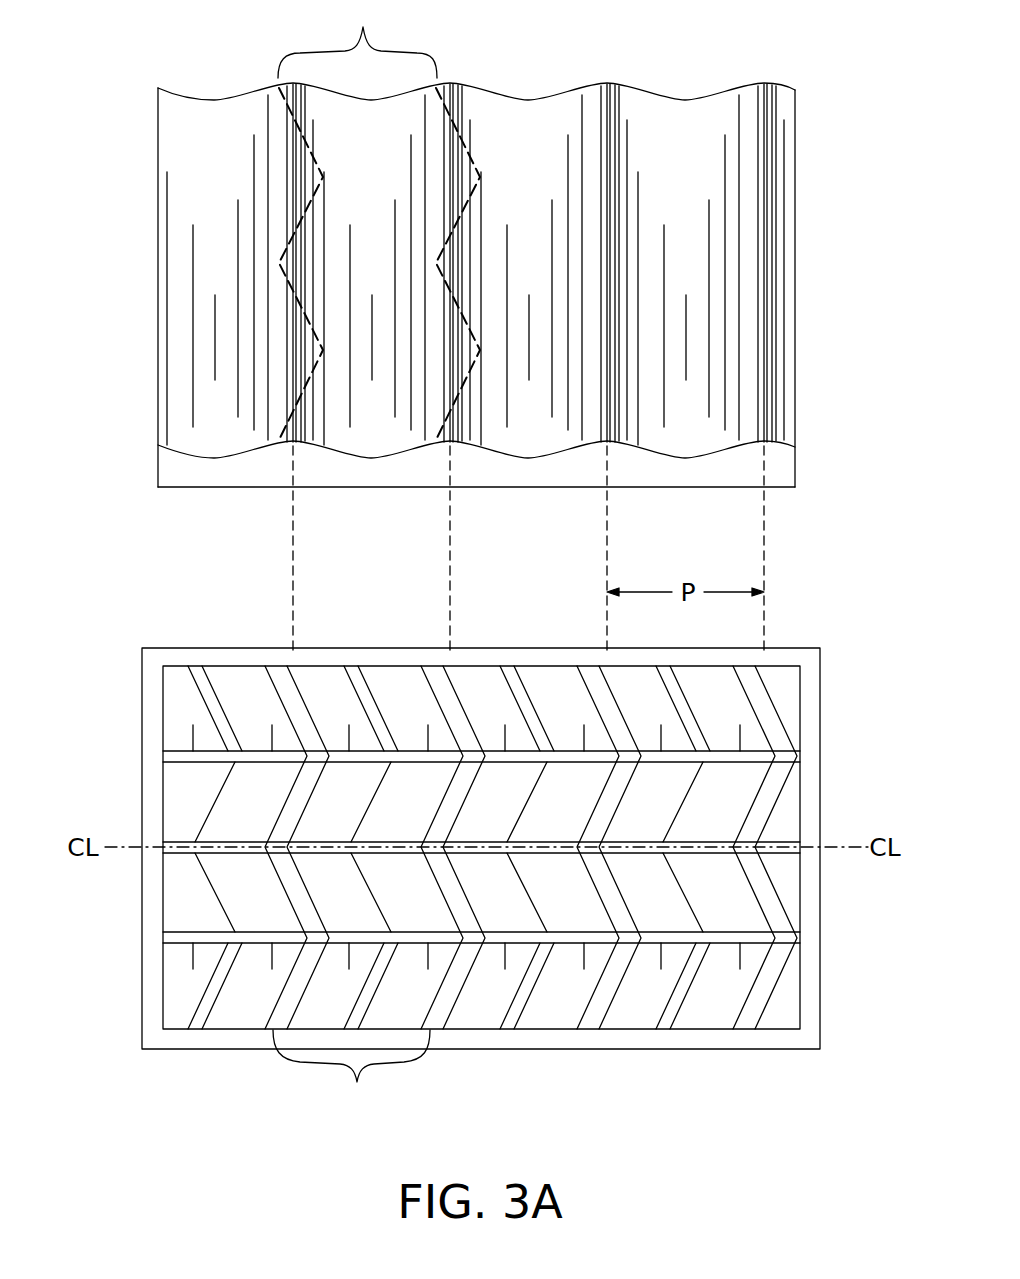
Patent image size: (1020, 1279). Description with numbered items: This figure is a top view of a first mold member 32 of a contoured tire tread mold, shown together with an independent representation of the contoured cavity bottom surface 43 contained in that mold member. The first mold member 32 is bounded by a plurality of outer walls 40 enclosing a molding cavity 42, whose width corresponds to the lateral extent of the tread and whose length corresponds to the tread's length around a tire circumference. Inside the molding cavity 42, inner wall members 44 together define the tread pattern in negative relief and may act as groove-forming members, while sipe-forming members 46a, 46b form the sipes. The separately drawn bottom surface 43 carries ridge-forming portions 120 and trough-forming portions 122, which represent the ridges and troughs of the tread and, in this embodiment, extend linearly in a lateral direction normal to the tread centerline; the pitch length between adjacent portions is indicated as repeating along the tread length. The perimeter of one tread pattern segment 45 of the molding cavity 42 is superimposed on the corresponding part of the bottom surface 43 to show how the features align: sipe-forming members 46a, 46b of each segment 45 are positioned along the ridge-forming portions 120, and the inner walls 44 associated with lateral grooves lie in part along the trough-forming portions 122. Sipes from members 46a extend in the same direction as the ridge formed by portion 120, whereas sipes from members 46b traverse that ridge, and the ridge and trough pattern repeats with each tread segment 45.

The first mold member 32 is at (752, 1049).
The outer walls 40 is at (150, 700).
The molding cavity 42 is at (712, 712).
The contoured cavity bottom surface 43 is at (780, 391).
The inner wall members 44 is at (277, 680).
The tread pattern segment 45 is at (376, 558).
The sipe-forming member 46a is at (585, 737).
The sipe-forming member 46b is at (522, 817).
The ridge-forming portion 120 is at (527, 90).
The trough-forming portion 122 is at (605, 68).